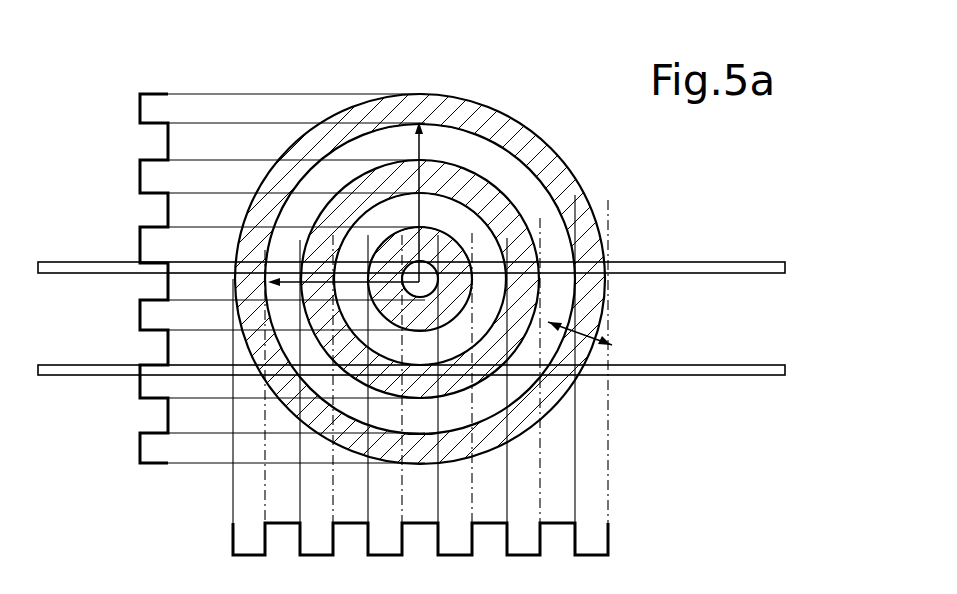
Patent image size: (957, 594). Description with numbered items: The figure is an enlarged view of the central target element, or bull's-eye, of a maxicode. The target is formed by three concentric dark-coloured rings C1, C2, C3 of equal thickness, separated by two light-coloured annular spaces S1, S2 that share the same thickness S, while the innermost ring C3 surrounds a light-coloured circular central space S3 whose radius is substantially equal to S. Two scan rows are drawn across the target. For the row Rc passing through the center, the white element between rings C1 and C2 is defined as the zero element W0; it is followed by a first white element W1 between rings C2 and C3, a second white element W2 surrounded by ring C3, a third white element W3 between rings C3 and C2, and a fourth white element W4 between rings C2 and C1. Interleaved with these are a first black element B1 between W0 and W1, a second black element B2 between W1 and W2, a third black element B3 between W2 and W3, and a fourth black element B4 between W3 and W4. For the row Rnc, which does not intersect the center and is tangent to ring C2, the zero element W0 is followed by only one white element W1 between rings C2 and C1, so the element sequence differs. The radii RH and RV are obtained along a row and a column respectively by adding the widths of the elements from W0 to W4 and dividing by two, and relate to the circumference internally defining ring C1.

The radius Rv RV is at (413, 118).
The radius Rh RH is at (250, 284).
The outermost dark ring C1 is at (571, 167).
The intermediate dark ring C2 is at (529, 215).
The innermost dark ring C3 is at (470, 254).
The first light-coloured annular space S1 is at (492, 157).
The second light-coloured annular space S2 is at (428, 190).
The circular central space S3 is at (390, 330).
The thickness of annular spaces S is at (592, 335).
The first black element B1 is at (400, 268).
The second black element B2 is at (370, 270).
The third black element B3 is at (440, 250).
The fourth black element B4 is at (545, 262).
The zero white element W0 is at (268, 276).
The first white element W1 is at (282, 273).
The second white element W2 is at (438, 405).
The third white element W3 is at (505, 295).
The fourth white element W4 is at (558, 273).
The row through center Rc is at (750, 272).
The row not intersecting center Rnc is at (780, 367).